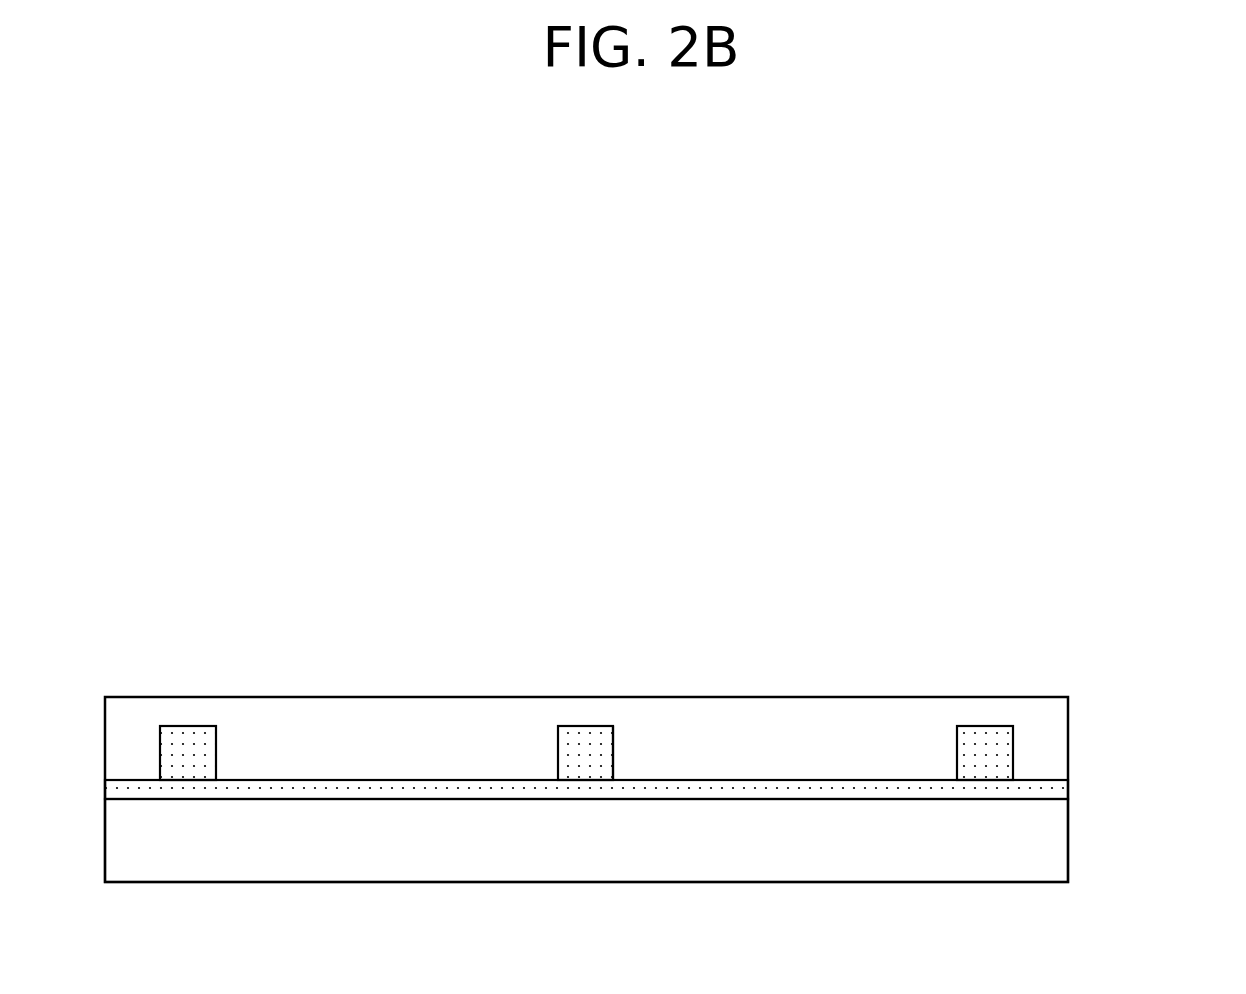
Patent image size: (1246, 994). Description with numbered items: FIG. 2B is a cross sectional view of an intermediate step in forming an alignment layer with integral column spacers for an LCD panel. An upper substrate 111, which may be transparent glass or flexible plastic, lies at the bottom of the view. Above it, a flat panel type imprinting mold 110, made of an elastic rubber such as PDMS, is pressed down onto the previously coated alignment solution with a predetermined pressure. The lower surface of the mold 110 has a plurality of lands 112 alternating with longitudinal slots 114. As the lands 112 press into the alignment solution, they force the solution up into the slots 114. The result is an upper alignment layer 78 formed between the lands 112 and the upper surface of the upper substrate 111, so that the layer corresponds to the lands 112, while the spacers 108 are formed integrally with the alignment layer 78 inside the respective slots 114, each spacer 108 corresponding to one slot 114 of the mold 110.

The imprinting mold 110 is at (1094, 706).
The upper substrate 111 is at (1060, 849).
The upper alignment layer 78 is at (1060, 792).
The lands 112 is at (787, 779).
The spacers 108 is at (583, 738).
The longitudinal slots 114 is at (613, 753).